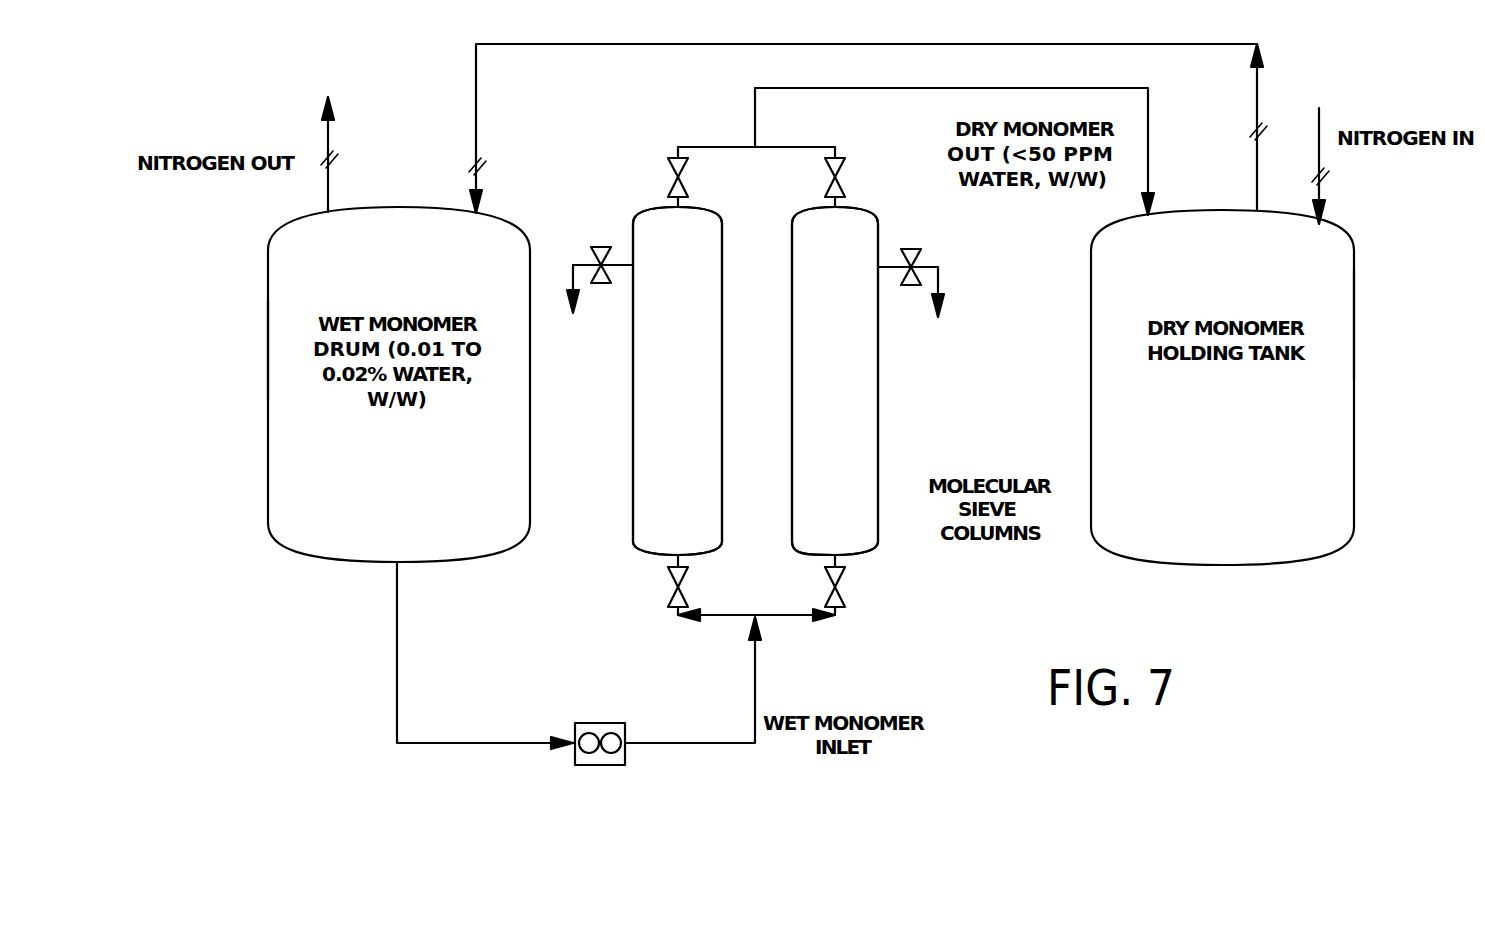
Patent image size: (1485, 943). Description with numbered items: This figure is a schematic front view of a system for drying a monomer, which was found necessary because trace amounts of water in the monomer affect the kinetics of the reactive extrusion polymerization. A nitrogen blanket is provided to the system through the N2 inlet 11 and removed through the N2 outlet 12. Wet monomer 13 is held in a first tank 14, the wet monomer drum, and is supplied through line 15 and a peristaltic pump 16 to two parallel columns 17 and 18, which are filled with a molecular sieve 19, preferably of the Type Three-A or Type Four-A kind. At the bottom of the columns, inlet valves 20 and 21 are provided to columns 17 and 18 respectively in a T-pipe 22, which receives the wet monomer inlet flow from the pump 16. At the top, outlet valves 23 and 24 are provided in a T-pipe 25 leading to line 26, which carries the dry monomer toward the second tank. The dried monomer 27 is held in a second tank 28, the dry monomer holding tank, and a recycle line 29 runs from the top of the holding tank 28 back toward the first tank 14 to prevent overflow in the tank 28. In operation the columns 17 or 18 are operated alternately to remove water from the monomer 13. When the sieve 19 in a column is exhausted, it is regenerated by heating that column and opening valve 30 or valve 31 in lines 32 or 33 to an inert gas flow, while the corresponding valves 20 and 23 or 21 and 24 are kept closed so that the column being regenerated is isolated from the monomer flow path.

The N2 inlet 11 is at (1320, 118).
The N2 outlet 12 is at (323, 136).
The wet monomer 13 is at (325, 518).
The first tank 14 is at (268, 338).
The line 15 is at (505, 743).
The peristaltic pump 16 is at (593, 723).
The column 17 is at (636, 408).
The column 18 is at (876, 378).
The molecular sieve 19 is at (805, 358).
The inlet valve 20 is at (668, 587).
The inlet valve 21 is at (830, 587).
The T-pipe 22 is at (732, 618).
The outlet valve 23 is at (668, 172).
The outlet valve 24 is at (848, 172).
The T-pipe 25 is at (700, 147).
The line 26 is at (885, 87).
The dried monomer 27 is at (1254, 464).
The second tank 28 is at (1354, 318).
The recycle line 29 is at (1107, 44).
The valve 30 is at (598, 247).
The valve 31 is at (918, 255).
The line 32 is at (565, 303).
The line 33 is at (940, 304).